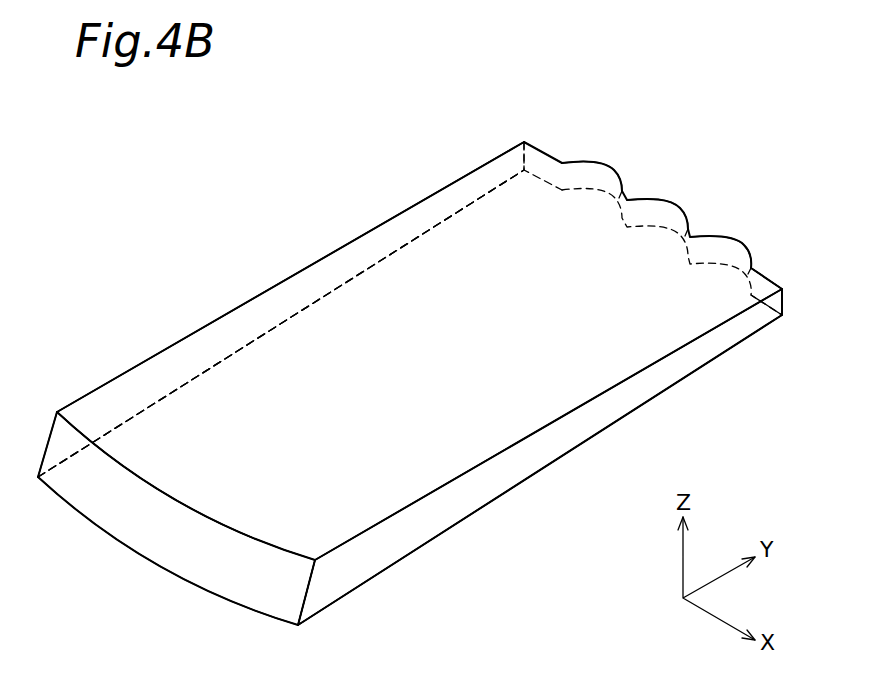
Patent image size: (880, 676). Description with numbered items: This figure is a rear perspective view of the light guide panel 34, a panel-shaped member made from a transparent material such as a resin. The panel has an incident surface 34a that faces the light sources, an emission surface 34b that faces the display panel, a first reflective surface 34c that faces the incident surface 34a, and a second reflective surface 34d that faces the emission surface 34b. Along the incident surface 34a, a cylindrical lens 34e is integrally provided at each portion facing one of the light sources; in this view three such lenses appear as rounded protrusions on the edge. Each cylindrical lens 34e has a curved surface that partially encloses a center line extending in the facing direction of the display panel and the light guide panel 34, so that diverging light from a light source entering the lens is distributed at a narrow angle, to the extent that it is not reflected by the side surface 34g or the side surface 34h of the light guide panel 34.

The light guide panel 34 is at (253, 205).
The incident surface 34a is at (782, 287).
The emission surface 34b is at (403, 375).
The first reflective surface 34c is at (128, 532).
The second reflective surface 34d is at (473, 480).
The cylindrical lens 34e is at (642, 152).
The side surface 34g is at (553, 447).
The side surface 34h is at (300, 278).